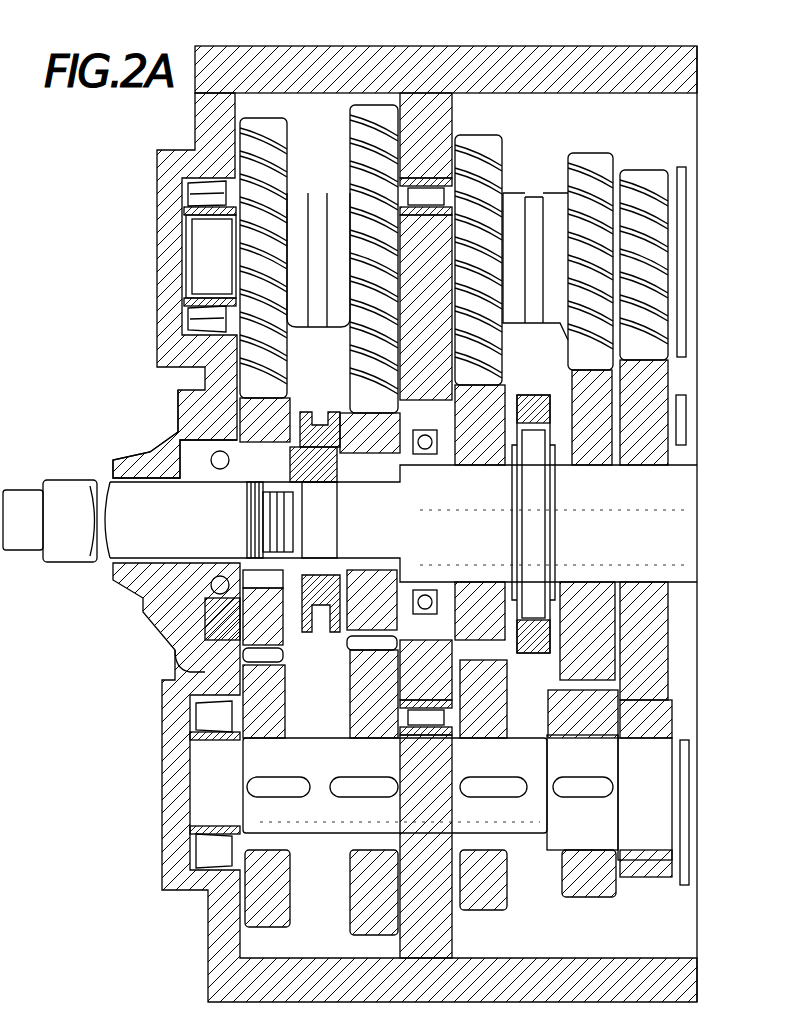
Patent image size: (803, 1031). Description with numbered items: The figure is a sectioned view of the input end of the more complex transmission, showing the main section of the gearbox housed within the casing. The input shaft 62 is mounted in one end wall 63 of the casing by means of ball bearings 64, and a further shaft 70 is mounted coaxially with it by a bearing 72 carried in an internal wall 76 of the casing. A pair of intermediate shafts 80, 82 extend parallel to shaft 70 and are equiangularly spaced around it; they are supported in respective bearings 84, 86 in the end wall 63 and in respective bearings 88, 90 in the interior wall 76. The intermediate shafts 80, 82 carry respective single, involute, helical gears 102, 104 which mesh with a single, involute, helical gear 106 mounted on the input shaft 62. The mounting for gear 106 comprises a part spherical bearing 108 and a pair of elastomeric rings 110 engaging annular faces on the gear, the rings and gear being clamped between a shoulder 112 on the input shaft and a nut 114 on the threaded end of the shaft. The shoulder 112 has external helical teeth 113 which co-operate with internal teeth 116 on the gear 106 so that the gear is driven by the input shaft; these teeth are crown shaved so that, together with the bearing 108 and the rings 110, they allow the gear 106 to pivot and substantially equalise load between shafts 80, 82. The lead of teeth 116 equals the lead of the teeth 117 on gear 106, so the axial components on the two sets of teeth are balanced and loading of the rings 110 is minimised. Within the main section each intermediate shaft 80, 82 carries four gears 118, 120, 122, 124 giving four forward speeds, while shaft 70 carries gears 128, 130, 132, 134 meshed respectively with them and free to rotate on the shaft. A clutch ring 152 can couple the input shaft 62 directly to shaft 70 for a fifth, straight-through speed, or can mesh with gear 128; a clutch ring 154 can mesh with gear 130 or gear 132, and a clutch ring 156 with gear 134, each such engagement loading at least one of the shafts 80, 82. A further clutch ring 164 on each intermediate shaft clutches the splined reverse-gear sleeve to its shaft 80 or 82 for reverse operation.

The input shaft 62 is at (65, 492).
The end wall 63 is at (200, 120).
The ball bearings 64 is at (182, 432).
The shaft 70 is at (628, 514).
The bearing 72 is at (427, 452).
The internal wall 76 is at (438, 137).
The intermediate shaft 80 is at (190, 258).
The intermediate shaft 82 is at (435, 802).
The bearing 84 is at (186, 190).
The bearing 86 is at (200, 722).
The bearing 88 is at (427, 200).
The bearing 90 is at (432, 738).
The helical gear 102 is at (278, 152).
The helical gear 104 is at (280, 900).
The helical gear 106 is at (215, 645).
The part spherical bearing 108 is at (282, 555).
The elastomeric rings 110 is at (285, 565).
The shoulder 112 is at (250, 488).
The external helical teeth 113 is at (285, 425).
The nut 114 is at (310, 492).
The internal teeth 116 is at (205, 598).
The teeth 117 is at (282, 650).
The gear 118 is at (365, 158).
The gear 120 is at (485, 160).
The gear 122 is at (580, 176).
The gear 124 is at (632, 182).
The gear 128 is at (358, 590).
The gear 130 is at (468, 600).
The gear 132 is at (568, 610).
The gear 134 is at (650, 615).
The clutch ring 152 is at (335, 632).
The clutch ring 154 is at (532, 398).
The clutch ring 156 is at (683, 405).
The clutch ring 164 is at (680, 166).